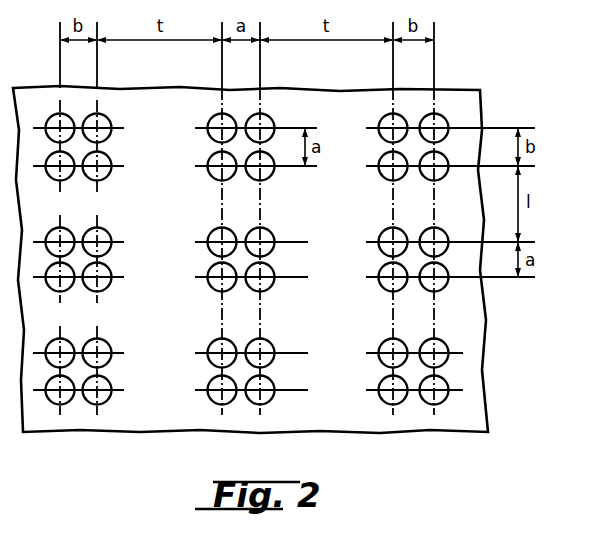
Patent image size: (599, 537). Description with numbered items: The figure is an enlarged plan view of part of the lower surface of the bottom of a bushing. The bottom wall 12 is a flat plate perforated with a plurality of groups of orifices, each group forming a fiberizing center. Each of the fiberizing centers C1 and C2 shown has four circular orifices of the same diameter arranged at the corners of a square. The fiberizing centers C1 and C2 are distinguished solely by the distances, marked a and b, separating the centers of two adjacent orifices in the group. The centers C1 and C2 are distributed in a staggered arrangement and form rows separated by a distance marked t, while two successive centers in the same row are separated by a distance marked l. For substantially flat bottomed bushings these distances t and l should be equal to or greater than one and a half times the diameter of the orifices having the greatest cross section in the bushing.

The bottom wall 12 is at (470, 407).
The fiberizing center C1 is at (197, 241).
The fiberizing center C2 is at (202, 370).